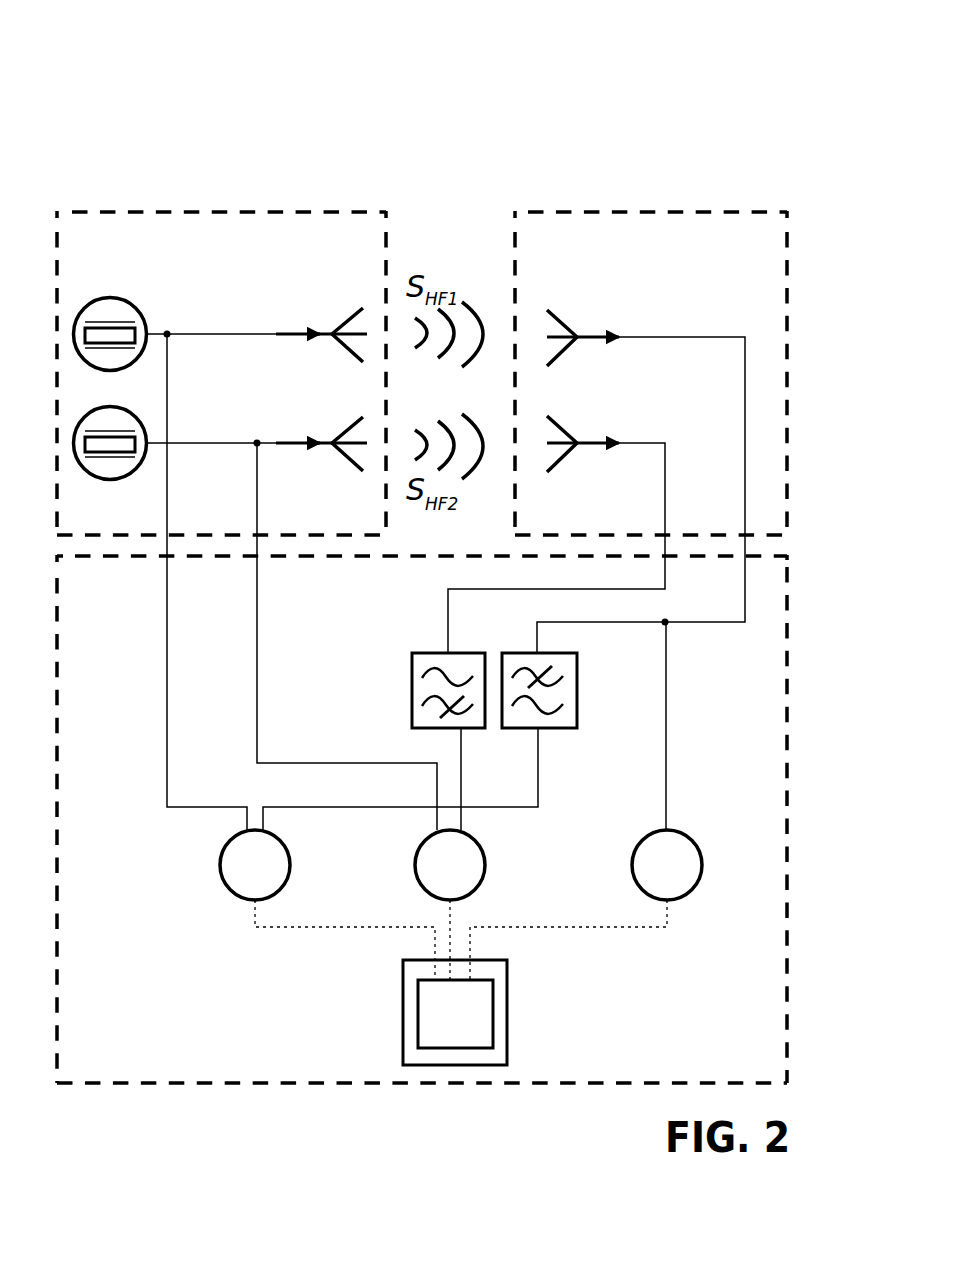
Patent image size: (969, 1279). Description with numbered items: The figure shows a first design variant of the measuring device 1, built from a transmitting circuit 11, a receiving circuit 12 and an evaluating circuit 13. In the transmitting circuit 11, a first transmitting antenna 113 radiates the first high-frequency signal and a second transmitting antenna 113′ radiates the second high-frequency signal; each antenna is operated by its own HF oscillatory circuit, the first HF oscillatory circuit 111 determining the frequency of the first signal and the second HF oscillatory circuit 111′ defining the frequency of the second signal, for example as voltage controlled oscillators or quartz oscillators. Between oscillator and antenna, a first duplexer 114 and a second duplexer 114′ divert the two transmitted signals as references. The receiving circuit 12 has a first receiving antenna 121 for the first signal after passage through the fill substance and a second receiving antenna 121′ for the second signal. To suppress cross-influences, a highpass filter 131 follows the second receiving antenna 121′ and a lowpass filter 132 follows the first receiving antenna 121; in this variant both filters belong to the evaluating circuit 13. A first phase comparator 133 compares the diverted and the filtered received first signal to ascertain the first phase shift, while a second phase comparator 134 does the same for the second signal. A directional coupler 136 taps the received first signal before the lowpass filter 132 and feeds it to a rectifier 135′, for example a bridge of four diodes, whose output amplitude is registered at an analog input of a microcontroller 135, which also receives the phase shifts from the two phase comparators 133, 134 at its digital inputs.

The measuring device 1 is at (677, 108).
The transmitting circuit 11 is at (188, 212).
The receiving circuit 12 is at (592, 212).
The evaluating circuit 13 is at (310, 1087).
The first HF oscillatory circuit 111 is at (113, 302).
The second HF oscillatory circuit 111′ is at (115, 479).
The first transmitting antenna 113 is at (326, 343).
The second transmitting antenna 113′ is at (326, 452).
The first duplexer 114 is at (168, 333).
The second duplexer 114′ is at (256, 446).
The first receiving antenna 121 is at (580, 336).
The second receiving antenna 121′ is at (580, 442).
The highpass filter 131 is at (412, 677).
The lowpass filter 132 is at (577, 693).
The first phase comparator 133 is at (226, 888).
The second phase comparator 134 is at (486, 867).
The microcontroller 135 is at (508, 1038).
The rectifier 135′ is at (672, 833).
The directional coupler 136 is at (668, 624).